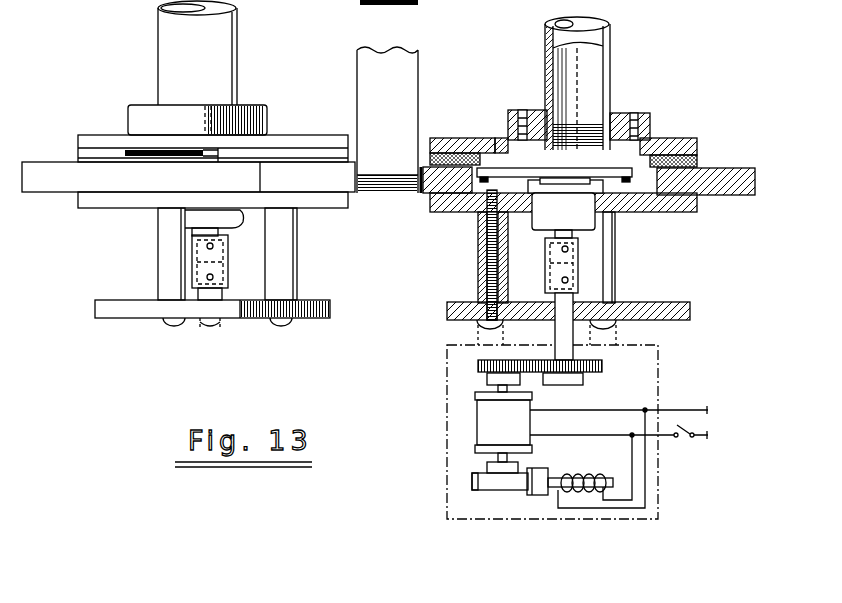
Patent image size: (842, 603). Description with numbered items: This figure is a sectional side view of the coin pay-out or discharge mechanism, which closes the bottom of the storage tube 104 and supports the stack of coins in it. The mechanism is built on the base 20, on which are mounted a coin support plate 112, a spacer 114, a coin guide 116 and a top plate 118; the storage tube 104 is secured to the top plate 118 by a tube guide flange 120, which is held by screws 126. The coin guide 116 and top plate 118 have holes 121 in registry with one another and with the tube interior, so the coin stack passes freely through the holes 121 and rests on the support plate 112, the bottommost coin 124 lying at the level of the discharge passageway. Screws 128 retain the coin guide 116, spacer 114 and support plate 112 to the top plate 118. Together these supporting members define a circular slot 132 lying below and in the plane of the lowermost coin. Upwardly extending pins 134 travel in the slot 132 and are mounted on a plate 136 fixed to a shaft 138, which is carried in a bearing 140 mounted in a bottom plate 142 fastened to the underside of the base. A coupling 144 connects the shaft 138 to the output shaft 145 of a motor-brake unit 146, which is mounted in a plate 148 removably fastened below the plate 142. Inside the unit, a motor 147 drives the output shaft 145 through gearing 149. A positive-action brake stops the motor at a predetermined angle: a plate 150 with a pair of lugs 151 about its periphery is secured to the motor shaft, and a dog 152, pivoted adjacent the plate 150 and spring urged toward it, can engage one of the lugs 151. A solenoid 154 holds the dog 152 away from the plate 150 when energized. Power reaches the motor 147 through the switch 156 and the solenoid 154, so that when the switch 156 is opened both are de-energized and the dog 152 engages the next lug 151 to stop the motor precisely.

The base 20 is at (758, 182).
The storage tube 104 is at (612, 30).
The coin support plate 112 is at (648, 142).
The spacer 114 is at (697, 172).
The coin guide 116 is at (697, 163).
The top plate 118 is at (697, 150).
The tube guide flange 120 is at (650, 122).
The holes 121 is at (608, 100).
The bottommost coin 124 is at (624, 114).
The screws 126 is at (522, 110).
The screws 128 is at (501, 138).
The slot 132 is at (496, 140).
The pins 134 is at (662, 156).
The plate 136 is at (630, 210).
The shaft 138 is at (546, 244).
The bearing 140 is at (576, 219).
The bottom plate 142 is at (697, 206).
The coupling 144 is at (228, 268).
The output shaft 145 is at (196, 326).
The motor-brake unit 146 is at (236, 347).
The motor 147 is at (515, 431).
The plate 148 is at (690, 312).
The gearing 149 is at (478, 366).
The plate 150 is at (505, 483).
The lugs 151 is at (472, 482).
The dog 152 is at (540, 495).
The solenoid 154 is at (583, 473).
The switch 156 is at (688, 442).